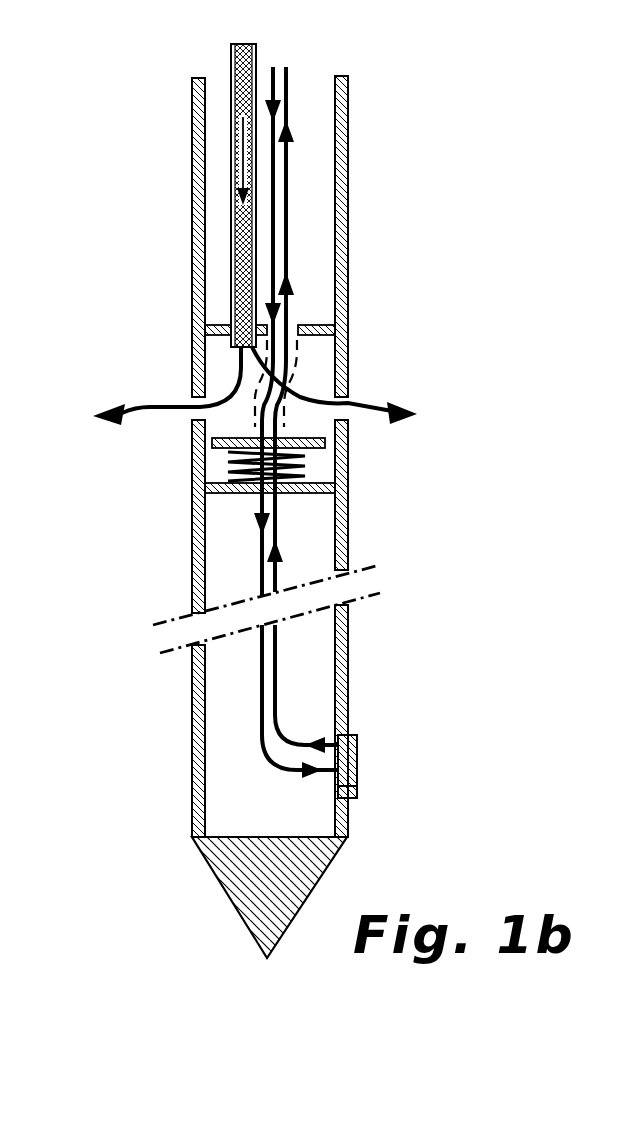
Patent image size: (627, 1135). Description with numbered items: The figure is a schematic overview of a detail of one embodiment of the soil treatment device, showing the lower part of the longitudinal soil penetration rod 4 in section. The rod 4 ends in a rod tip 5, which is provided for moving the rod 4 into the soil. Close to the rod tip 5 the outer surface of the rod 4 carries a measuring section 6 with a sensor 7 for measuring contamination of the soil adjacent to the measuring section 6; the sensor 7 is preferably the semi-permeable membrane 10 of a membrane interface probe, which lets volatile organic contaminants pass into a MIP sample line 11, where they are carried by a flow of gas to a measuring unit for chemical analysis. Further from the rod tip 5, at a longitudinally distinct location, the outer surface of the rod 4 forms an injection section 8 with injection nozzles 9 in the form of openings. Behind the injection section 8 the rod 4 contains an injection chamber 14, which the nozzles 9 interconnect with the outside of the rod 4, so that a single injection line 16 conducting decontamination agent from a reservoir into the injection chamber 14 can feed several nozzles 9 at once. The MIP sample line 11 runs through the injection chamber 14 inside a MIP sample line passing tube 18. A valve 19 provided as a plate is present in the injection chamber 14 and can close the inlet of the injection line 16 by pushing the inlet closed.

The soil penetration rod 4 is at (366, 509).
The rod tip 5 is at (350, 869).
The measuring section 6 is at (372, 757).
The sensor 7 is at (355, 790).
The injection section 8 is at (430, 412).
The injection nozzle 9 is at (347, 400).
The membrane 10 is at (355, 738).
The MIP sample line 11 is at (278, 683).
The injection chamber 14 is at (320, 352).
The injection line 16 is at (236, 273).
The MIP sample line passing tube 18 is at (285, 429).
The valve 19 is at (317, 445).